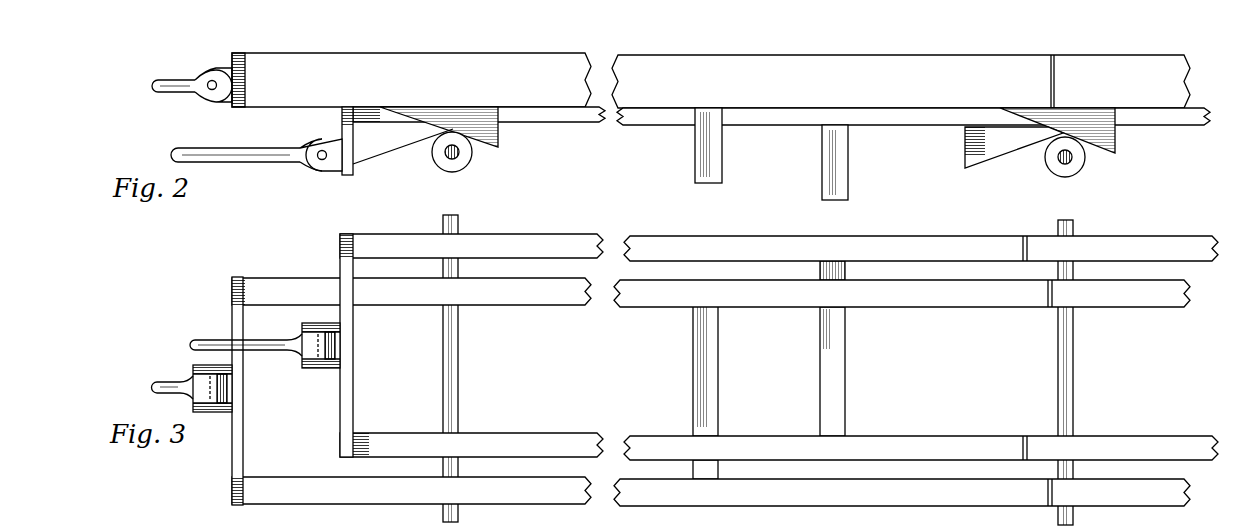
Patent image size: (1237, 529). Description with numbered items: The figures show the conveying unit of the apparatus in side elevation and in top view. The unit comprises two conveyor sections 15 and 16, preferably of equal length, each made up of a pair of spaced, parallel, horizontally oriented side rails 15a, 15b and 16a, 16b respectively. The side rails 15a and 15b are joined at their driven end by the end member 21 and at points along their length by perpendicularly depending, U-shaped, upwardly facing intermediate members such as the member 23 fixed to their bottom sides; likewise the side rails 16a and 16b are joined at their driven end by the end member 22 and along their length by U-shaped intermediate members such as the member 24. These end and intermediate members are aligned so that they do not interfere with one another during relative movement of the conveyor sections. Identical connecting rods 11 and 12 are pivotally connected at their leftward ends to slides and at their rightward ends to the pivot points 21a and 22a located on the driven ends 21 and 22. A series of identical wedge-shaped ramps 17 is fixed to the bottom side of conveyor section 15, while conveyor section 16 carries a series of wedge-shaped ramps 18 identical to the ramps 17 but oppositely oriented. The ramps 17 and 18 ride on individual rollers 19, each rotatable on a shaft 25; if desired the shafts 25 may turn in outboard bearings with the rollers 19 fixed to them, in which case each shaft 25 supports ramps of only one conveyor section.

In FIG. 2, the connecting rod 11 is at (172, 80).
In FIG. 3, the connecting rod 11 is at (172, 382).
In FIG. 2, the connecting rod 12 is at (238, 148).
In FIG. 3, the connecting rod 12 is at (220, 340).
In FIG. 2, the conveyor section 15 is at (360, 44).
In FIG. 3, the conveyor section 15 is at (266, 275).
In FIG. 3, the side rail 15a is at (318, 285).
In FIG. 3, the side rail 15b is at (313, 485).
In FIG. 2, the conveyor section 16 is at (553, 124).
In FIG. 3, the conveyor section 16 is at (386, 233).
In FIG. 3, the side rail 16a is at (403, 246).
In FIG. 3, the side rail 16b is at (410, 440).
In FIG. 2, the wedge-shaped ramp 17 is at (490, 139).
In FIG. 2, the wedge-shaped ramp 18 is at (380, 145).
In FIG. 2, the roller 19 is at (452, 166).
In FIG. 2, the end member 21 is at (238, 70).
In FIG. 3, the end member 21 is at (232, 445).
In FIG. 2, the pivot point 21a is at (212, 79).
In FIG. 3, the pivot point 21a is at (212, 388).
In FIG. 2, the end member 22 is at (345, 127).
In FIG. 3, the end member 22 is at (346, 400).
In FIG. 2, the pivot point 22a is at (320, 147).
In FIG. 3, the pivot point 22a is at (321, 345).
In FIG. 2, the intermediate member 23 is at (714, 160).
In FIG. 3, the intermediate member 23 is at (700, 383).
In FIG. 2, the intermediate member 24 is at (830, 150).
In FIG. 3, the intermediate member 24 is at (826, 377).
In FIG. 2, the shaft 25 is at (461, 153).
In FIG. 3, the shaft 25 is at (455, 378).